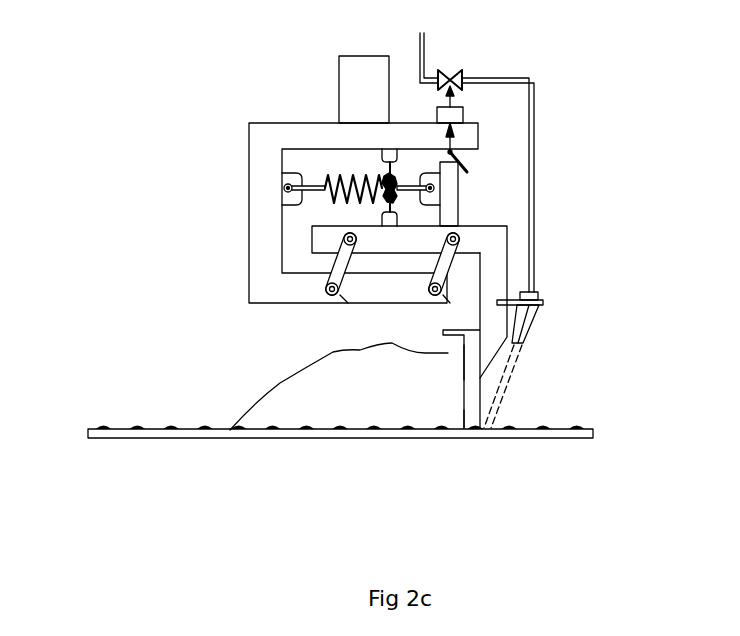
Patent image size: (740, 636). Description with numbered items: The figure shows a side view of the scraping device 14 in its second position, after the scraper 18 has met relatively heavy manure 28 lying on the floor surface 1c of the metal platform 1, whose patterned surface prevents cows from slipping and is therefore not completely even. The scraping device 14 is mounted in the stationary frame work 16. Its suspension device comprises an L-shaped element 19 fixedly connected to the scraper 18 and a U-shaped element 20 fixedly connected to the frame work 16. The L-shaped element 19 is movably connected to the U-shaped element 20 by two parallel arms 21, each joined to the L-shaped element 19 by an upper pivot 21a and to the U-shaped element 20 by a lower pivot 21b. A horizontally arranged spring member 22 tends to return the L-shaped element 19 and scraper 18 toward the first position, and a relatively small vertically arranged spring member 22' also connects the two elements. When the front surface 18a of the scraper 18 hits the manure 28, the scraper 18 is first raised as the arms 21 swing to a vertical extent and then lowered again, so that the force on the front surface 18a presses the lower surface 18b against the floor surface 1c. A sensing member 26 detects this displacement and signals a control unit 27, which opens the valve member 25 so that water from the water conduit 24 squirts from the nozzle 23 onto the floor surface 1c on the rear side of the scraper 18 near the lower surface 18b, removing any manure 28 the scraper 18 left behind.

The platform 1 is at (168, 437).
The floor surface 1c is at (215, 427).
The scraping device 14 is at (200, 80).
The stationary frame work 16 is at (353, 88).
The scraper 18 is at (481, 392).
The front surface 18a is at (464, 385).
The lower surface 18b is at (473, 432).
The L-shaped element 19 is at (479, 237).
The U-shaped element 20 is at (265, 165).
The arms 21 is at (428, 265).
The upper pivot 21a is at (447, 239).
The lower pivot 21b is at (427, 294).
The spring member 22 is at (361, 166).
The vertically arranged spring member 22' is at (408, 159).
The nozzle 23 is at (523, 322).
The water conduit 24 is at (533, 160).
The valve member 25 is at (455, 73).
The sensing member 26 is at (469, 170).
The control unit 27 is at (450, 115).
The manure 28 is at (293, 393).